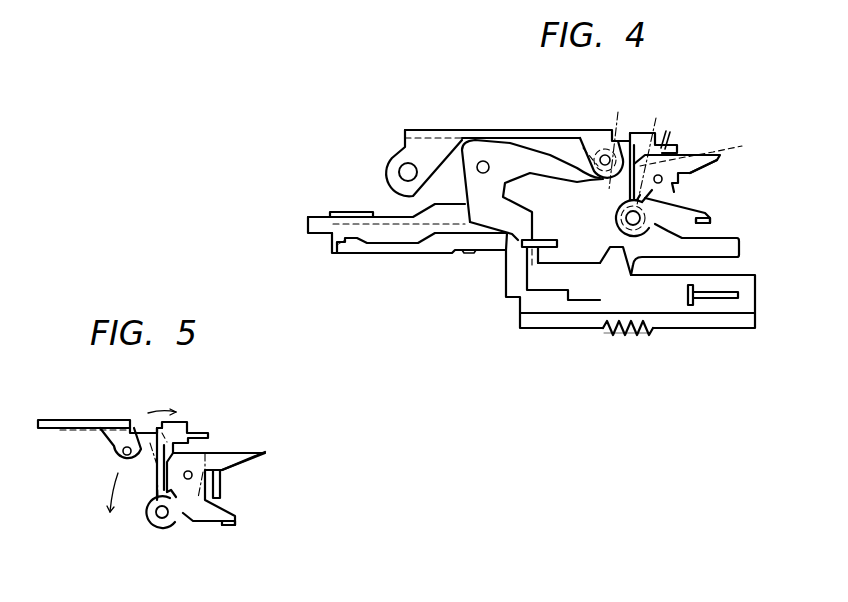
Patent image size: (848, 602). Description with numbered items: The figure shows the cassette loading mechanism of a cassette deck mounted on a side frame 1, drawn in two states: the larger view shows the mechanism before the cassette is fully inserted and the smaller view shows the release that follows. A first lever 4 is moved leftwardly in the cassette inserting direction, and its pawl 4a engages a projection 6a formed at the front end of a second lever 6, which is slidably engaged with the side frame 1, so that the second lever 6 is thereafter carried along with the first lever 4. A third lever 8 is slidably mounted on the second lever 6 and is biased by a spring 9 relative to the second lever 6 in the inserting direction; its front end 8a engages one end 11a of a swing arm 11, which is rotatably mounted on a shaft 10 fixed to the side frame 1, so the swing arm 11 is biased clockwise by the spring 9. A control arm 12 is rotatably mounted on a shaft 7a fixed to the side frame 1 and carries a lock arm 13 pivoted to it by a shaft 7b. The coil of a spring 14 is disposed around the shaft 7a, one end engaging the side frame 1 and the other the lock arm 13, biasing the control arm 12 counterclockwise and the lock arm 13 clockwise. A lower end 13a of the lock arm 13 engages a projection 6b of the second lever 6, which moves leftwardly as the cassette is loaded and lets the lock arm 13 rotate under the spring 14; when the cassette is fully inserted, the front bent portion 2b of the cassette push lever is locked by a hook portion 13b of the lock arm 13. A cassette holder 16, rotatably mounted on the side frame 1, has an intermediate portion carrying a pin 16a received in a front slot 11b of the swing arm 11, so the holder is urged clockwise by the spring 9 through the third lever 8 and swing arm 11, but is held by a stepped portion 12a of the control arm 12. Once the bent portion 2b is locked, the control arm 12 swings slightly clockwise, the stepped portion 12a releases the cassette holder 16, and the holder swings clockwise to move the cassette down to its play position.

In FIG. 4, the side frame 1 is at (668, 130).
In FIG. 5, the front bent portion 2b is at (222, 487).
In FIG. 4, the first lever 4 is at (350, 215).
In FIG. 4, the pawl 4a is at (344, 240).
In FIG. 4, the second lever 6 is at (444, 255).
In FIG. 4, the projection 6a is at (333, 250).
In FIG. 4, the projection 6b is at (650, 274).
In FIG. 4, the shaft 7a is at (625, 238).
In FIG. 5, the shaft 7a is at (162, 522).
In FIG. 4, the shaft 7b is at (663, 181).
In FIG. 5, the shaft 7b is at (188, 481).
In FIG. 4, the third lever 8 is at (598, 322).
In FIG. 4, the front end 8a is at (548, 240).
In FIG. 4, the spring 9 is at (631, 331).
In FIG. 4, the shaft 10 is at (478, 172).
In FIG. 4, the swing arm 11 is at (495, 199).
In FIG. 4, the one end 11a is at (522, 262).
In FIG. 4, the front slot 11b is at (613, 139).
In FIG. 4, the control arm 12 is at (640, 130).
In FIG. 5, the control arm 12 is at (186, 427).
In FIG. 4, the stepped portion 12a is at (632, 170).
In FIG. 5, the stepped portion 12a is at (170, 455).
In FIG. 4, the lock arm 13 is at (693, 155).
In FIG. 5, the lock arm 13 is at (226, 452).
In FIG. 4, the lower end 13a is at (706, 226).
In FIG. 5, the lower end 13a is at (230, 527).
In FIG. 4, the hook portion 13b is at (709, 167).
In FIG. 5, the hook portion 13b is at (245, 462).
In FIG. 4, the spring 14 is at (702, 152).
In FIG. 4, the cassette holder 16 is at (481, 129).
In FIG. 5, the cassette holder 16 is at (48, 429).
In FIG. 4, the pin 16a is at (602, 158).
In FIG. 5, the pin 16a is at (118, 450).